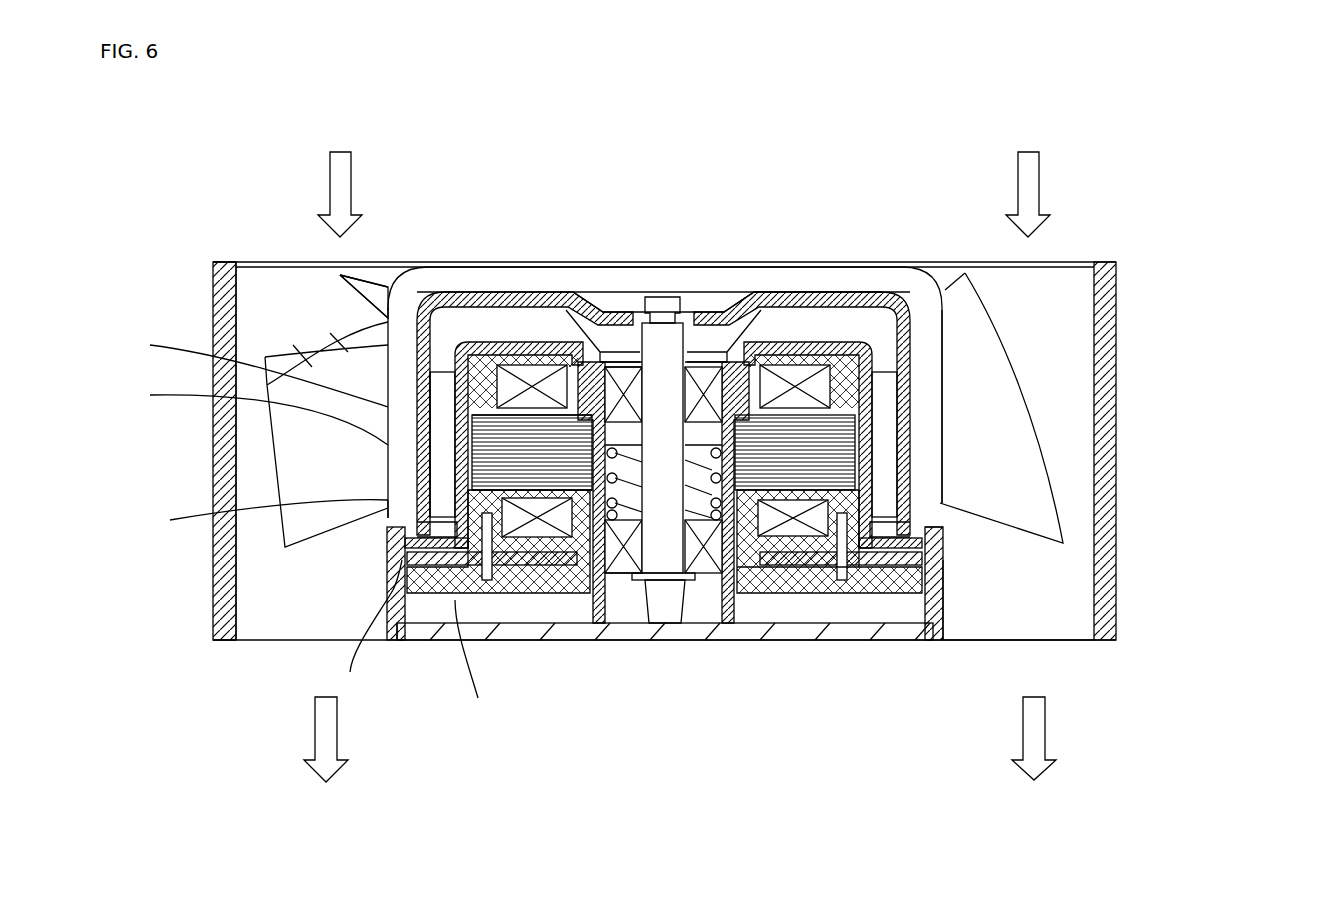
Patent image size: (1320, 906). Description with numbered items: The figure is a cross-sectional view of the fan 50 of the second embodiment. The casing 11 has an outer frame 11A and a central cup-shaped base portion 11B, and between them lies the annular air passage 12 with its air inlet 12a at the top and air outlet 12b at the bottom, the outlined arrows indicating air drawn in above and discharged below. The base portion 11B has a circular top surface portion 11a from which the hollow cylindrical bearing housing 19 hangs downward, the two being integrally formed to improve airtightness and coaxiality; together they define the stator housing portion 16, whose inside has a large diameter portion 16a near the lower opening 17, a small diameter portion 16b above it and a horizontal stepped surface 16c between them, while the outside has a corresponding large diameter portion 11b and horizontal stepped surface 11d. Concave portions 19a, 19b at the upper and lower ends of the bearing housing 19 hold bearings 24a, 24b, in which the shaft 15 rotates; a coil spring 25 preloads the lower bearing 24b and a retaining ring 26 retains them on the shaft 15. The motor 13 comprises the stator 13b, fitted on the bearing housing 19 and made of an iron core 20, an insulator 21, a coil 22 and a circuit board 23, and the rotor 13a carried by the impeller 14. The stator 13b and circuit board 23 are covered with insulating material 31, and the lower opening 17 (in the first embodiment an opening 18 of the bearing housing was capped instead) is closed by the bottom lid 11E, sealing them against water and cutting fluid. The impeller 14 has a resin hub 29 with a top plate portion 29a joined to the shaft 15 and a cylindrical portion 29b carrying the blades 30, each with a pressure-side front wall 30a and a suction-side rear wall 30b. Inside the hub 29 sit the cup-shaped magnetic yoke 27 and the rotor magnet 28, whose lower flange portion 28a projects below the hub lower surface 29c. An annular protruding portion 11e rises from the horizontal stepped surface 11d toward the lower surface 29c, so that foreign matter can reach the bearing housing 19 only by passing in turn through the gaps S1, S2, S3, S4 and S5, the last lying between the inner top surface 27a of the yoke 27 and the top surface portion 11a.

The casing 11 is at (1124, 617).
The outer frame 11A is at (1118, 263).
The base portion 11B is at (955, 642).
The bottom lid 11E is at (582, 634).
The top surface portion 11a is at (772, 335).
The large diameter portion 11b is at (952, 598).
The horizontal stepped surface 11d is at (947, 545).
The annular protruding portion 11e is at (398, 531).
The air passage 12 is at (300, 272).
The air inlet 12a is at (249, 263).
The air outlet 12b is at (290, 646).
The motor 13 is at (1270, 310).
The rotor 13a is at (1203, 393).
The stator 13b is at (1203, 275).
The impeller 14 is at (633, 97).
The shaft 15 is at (608, 318).
The stator housing portion 16 is at (795, 614).
The large diameter portion 16a is at (922, 583).
The small diameter portion 16b is at (895, 567).
The horizontal stepped surface 16c is at (870, 575).
The lower opening 17 is at (405, 641).
The opening 18 is at (645, 602).
The bearing housing 19 is at (748, 622).
The concave portion 19a is at (695, 362).
The concave portion 19b is at (740, 602).
The iron core 20 is at (872, 425).
The insulator 21 is at (898, 405).
The coil 22 is at (907, 370).
The circuit board 23 is at (947, 612).
The bearing 24a is at (711, 376).
The bearing 24b is at (716, 597).
The coil spring 25 is at (590, 600).
The retaining ring 26 is at (635, 602).
The magnetic yoke 27 is at (863, 452).
The inner top surface 27a is at (522, 322).
The rotor magnet 28 is at (870, 433).
The flange portion 28a is at (428, 523).
The hub 29 is at (478, 285).
The top plate portion 29a is at (843, 277).
The cylindrical portion 29b is at (923, 297).
The lower surface 29c is at (386, 522).
The blade 30 is at (387, 352).
The front wall 30a is at (292, 419).
The rear wall 30b is at (272, 339).
The insulating material 31 is at (448, 602).
The fan 50 is at (716, 186).
The gap S1 is at (260, 516).
The gap S2 is at (367, 632).
The gap S3 is at (472, 665).
The gap S4 is at (250, 414).
The gap S5 is at (250, 370).